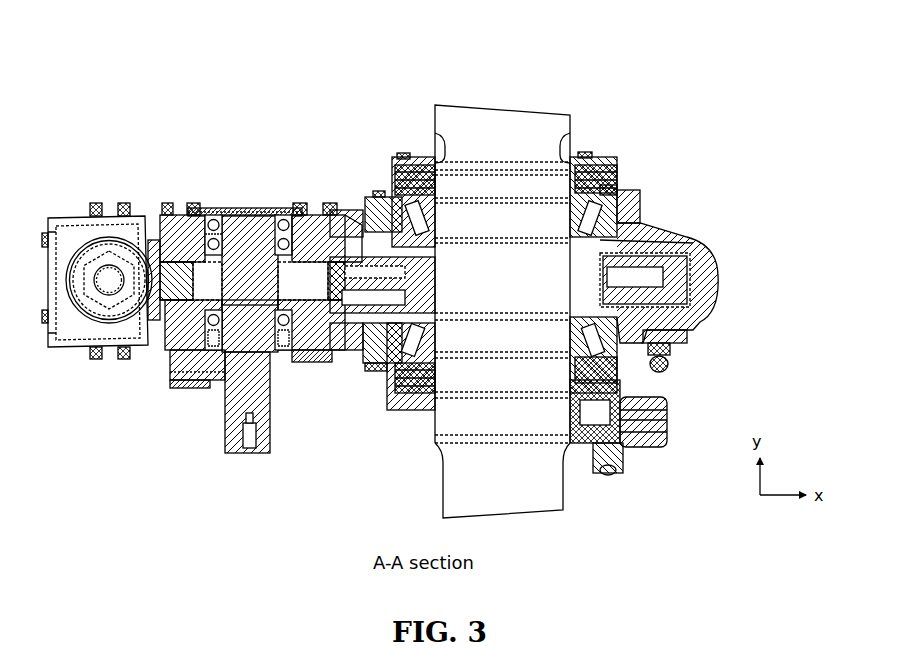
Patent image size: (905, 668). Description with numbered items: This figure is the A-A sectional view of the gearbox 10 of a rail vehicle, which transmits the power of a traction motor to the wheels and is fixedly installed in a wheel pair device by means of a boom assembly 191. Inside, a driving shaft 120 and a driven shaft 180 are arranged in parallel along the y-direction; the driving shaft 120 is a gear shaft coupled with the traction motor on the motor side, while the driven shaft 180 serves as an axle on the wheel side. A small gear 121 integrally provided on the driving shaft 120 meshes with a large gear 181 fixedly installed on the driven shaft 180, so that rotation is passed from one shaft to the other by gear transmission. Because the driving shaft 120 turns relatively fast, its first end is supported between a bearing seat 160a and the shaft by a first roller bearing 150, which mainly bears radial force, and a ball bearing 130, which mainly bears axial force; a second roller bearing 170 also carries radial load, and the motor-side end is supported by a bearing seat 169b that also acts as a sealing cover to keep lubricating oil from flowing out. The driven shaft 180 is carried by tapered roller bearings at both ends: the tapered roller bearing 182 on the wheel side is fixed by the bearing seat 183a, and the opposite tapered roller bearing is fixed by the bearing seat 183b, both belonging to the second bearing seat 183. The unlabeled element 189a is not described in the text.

The gearbox 10 is at (169, 70).
The driving shaft 120 is at (238, 440).
The small gear 121 is at (185, 300).
The ball bearing 130 is at (212, 215).
The first roller bearing 150 is at (190, 212).
The bearing seat 160a is at (322, 215).
The bearing seat 169b is at (195, 335).
The second roller bearing 170 is at (288, 330).
The driven shaft 180 is at (448, 475).
The large gear 181 is at (368, 278).
The tapered roller bearing 182 is at (579, 213).
The second bearing seat 183 is at (412, 353).
The bearing seat 183a is at (611, 197).
The bearing seat 183b is at (614, 395).
The cover plate 189a is at (262, 212).
The boom assembly 191 is at (108, 290).